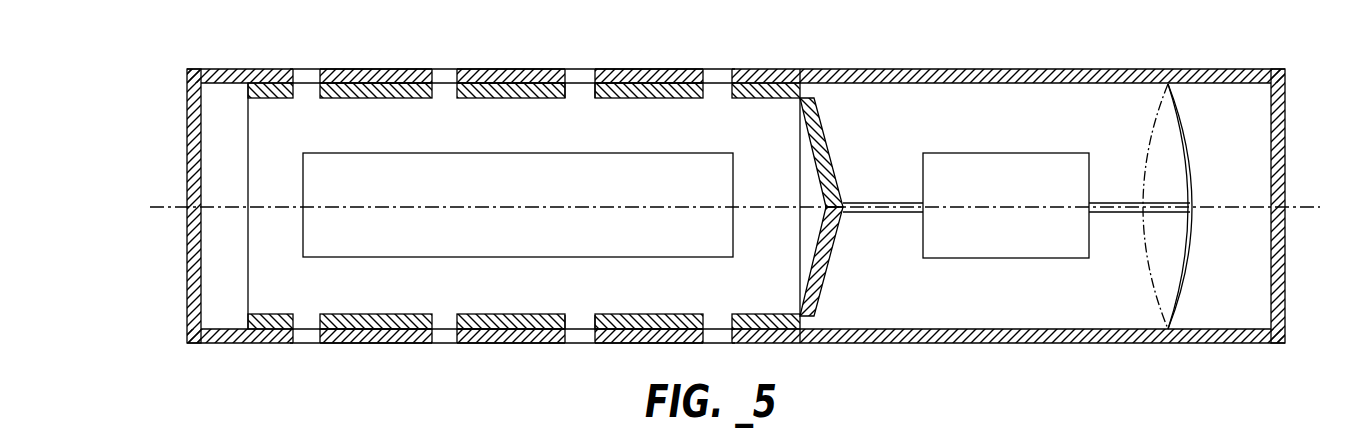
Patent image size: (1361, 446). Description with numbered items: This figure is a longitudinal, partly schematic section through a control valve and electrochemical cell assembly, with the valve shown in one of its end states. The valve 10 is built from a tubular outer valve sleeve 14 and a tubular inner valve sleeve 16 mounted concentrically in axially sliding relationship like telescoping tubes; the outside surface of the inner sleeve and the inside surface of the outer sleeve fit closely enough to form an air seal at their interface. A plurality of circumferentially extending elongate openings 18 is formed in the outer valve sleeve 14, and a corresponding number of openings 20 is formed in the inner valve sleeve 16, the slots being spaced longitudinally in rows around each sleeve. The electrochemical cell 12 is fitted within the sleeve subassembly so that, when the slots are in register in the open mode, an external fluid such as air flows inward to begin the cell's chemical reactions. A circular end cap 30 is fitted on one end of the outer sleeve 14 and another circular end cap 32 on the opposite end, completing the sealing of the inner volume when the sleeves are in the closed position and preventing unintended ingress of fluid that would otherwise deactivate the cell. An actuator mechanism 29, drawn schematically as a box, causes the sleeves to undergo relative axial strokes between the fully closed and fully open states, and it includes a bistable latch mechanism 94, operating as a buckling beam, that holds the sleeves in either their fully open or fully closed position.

The valve sleeve subassembly 10 is at (737, 177).
The electrochemical cell 12 is at (433, 148).
The outer valve sleeve 14 is at (648, 72).
The inner valve sleeve 16 is at (648, 98).
The openings 18 is at (733, 78).
The openings 20 is at (593, 95).
The actuator mechanism 29 is at (998, 150).
The circular end cap 30 is at (188, 133).
The circular end cap 32 is at (1286, 137).
The bistable latch mechanism 94 is at (1193, 283).